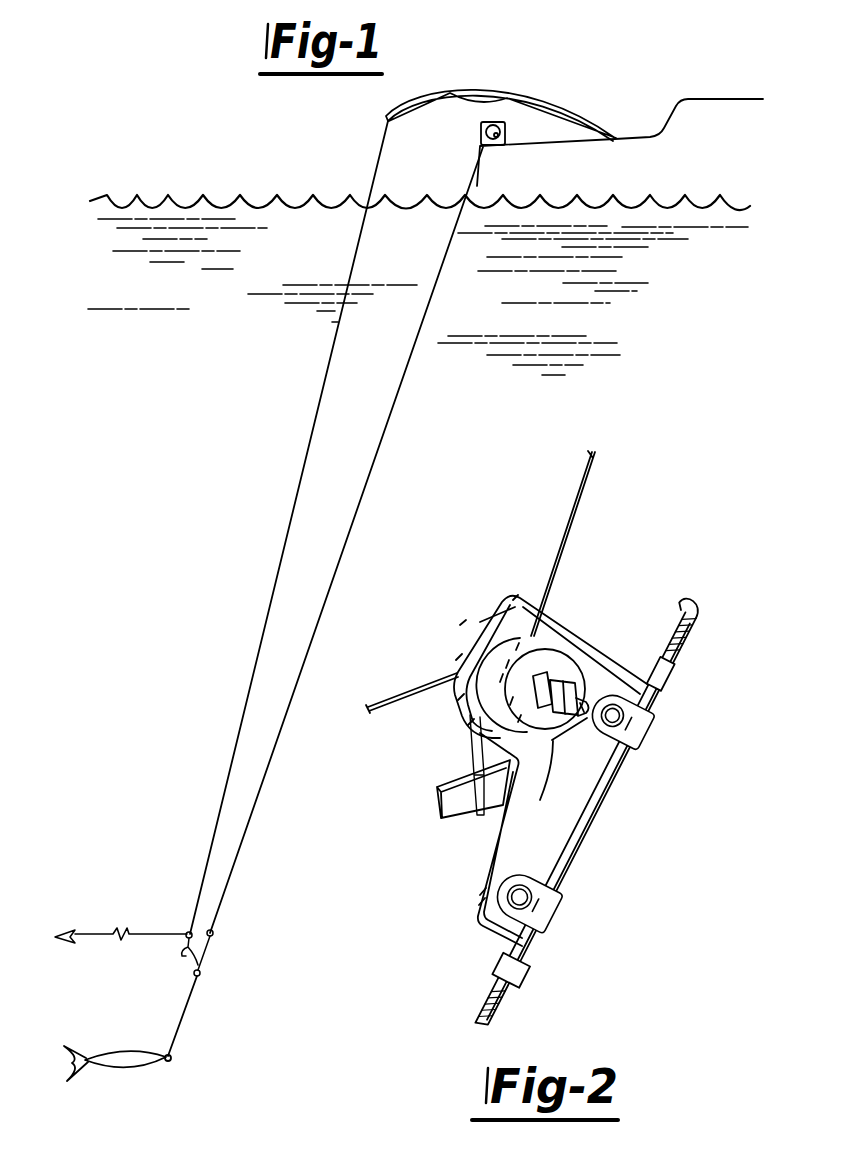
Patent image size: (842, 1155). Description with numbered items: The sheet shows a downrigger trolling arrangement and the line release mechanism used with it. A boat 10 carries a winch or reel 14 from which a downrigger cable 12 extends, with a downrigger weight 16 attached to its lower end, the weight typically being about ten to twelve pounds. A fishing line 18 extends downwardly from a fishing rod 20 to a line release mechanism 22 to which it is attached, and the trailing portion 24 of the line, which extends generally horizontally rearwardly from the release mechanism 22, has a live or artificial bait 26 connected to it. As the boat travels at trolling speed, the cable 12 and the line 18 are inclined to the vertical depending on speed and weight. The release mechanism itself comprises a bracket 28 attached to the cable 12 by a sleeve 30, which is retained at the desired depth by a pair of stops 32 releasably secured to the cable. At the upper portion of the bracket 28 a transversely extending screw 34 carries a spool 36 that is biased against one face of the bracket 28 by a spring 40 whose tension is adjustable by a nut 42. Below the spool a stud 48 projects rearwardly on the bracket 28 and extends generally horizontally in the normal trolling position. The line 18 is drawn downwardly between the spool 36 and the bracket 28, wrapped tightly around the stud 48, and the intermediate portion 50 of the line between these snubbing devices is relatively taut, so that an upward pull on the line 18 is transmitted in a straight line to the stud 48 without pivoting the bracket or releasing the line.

In FIG. 1, the boat 10 is at (729, 96).
In FIG. 1, the downrigger cable 12 is at (383, 432).
In FIG. 2, the downrigger cable 12 is at (688, 643).
In FIG. 1, the winch or reel 14 is at (506, 130).
In FIG. 1, the downrigger weight 16 is at (138, 1062).
In FIG. 1, the fishing line 18 is at (307, 458).
In FIG. 2, the fishing line 18 is at (583, 490).
In FIG. 1, the fishing rod 20 is at (470, 87).
In FIG. 1, the line release mechanism 22 is at (214, 950).
In FIG. 1, the trailing portion 24 is at (95, 933).
In FIG. 2, the trailing portion 24 is at (385, 704).
In FIG. 1, the bait 26 is at (63, 930).
In FIG. 2, the bracket 28 is at (602, 672).
In FIG. 2, the sleeve 30 is at (580, 840).
In FIG. 2, the stops 32 is at (661, 680).
In FIG. 2, the screw 34 is at (587, 722).
In FIG. 2, the spool 36 is at (557, 660).
In FIG. 2, the spring 40 is at (545, 673).
In FIG. 2, the nut 42 is at (545, 788).
In FIG. 2, the stud 48 is at (456, 815).
In FIG. 2, the intermediate portion 50 is at (480, 752).